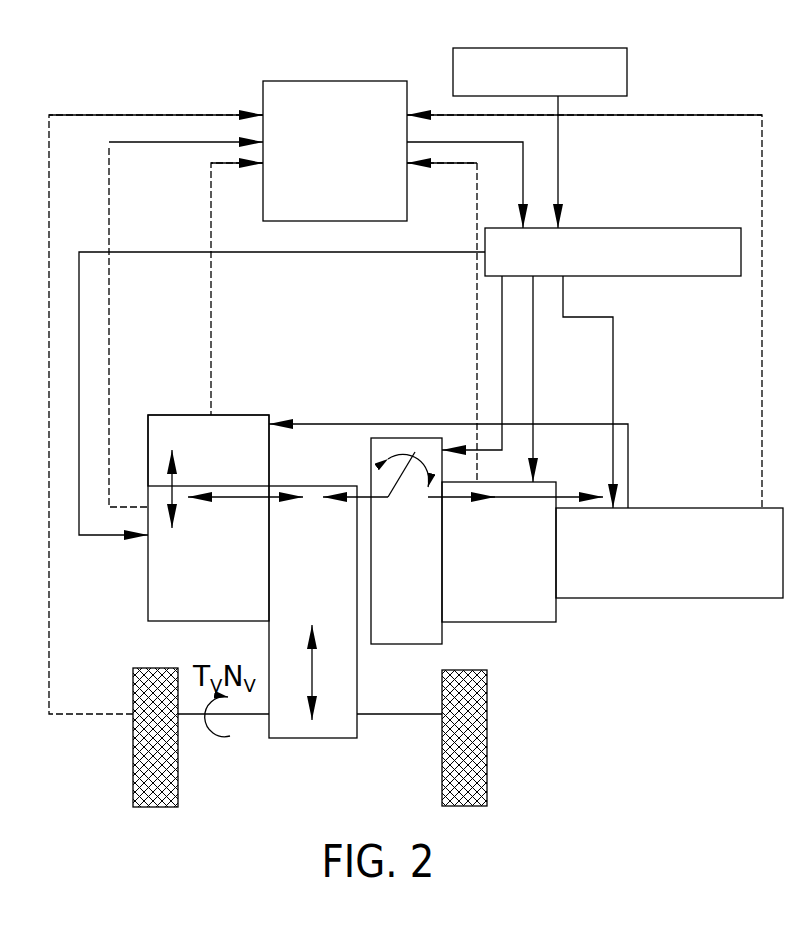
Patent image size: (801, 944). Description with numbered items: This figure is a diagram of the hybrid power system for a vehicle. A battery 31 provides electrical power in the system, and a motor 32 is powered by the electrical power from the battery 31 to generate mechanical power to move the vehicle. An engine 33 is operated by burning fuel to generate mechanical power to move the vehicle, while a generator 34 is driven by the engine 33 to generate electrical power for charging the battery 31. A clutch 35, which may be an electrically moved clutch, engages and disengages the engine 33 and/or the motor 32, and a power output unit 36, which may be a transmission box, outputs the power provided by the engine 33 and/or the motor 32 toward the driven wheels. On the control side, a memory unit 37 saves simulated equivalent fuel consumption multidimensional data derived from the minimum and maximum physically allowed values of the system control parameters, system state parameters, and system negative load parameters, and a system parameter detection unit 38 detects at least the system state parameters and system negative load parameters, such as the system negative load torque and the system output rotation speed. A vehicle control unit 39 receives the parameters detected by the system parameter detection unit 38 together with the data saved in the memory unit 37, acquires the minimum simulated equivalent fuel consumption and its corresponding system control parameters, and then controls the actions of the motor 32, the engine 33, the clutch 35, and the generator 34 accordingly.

The battery 31 is at (217, 415).
The motor 32 is at (178, 621).
The engine 33 is at (468, 622).
The generator 34 is at (595, 598).
The clutch 35 is at (377, 644).
The power output unit 36 is at (278, 738).
The memory unit 37 is at (535, 48).
The system parameter detection unit 38 is at (347, 81).
The vehicle control unit 39 is at (567, 228).